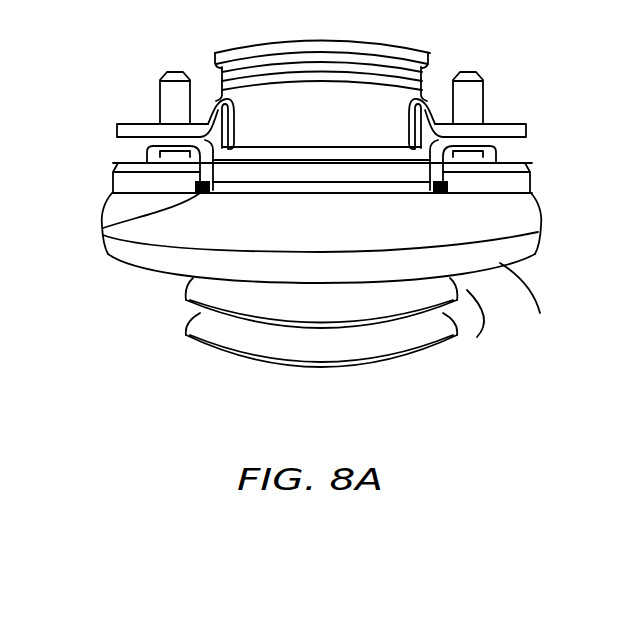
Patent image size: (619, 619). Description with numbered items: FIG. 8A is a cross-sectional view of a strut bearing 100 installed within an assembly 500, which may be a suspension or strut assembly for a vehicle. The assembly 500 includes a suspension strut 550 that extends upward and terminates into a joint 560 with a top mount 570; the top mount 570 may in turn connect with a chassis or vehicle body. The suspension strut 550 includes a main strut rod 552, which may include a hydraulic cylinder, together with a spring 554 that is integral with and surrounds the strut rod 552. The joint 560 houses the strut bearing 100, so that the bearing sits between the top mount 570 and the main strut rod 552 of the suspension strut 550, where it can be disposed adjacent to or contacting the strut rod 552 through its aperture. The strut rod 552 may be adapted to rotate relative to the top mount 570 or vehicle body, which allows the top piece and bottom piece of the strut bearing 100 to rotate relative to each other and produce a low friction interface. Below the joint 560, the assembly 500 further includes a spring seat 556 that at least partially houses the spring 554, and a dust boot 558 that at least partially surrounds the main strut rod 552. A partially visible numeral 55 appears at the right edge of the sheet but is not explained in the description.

The assembly 500 is at (108, 60).
The top mount 570 is at (363, 38).
The suspension strut 550 is at (92, 145).
The strut bearing 100 is at (430, 175).
The partially visible numeral 55 is at (608, 156).
The joint 560 is at (103, 228).
The spring seat 556 is at (512, 247).
The spring 554 is at (517, 310).
The dust boot 558 is at (203, 293).
The main strut rod 552 is at (365, 307).